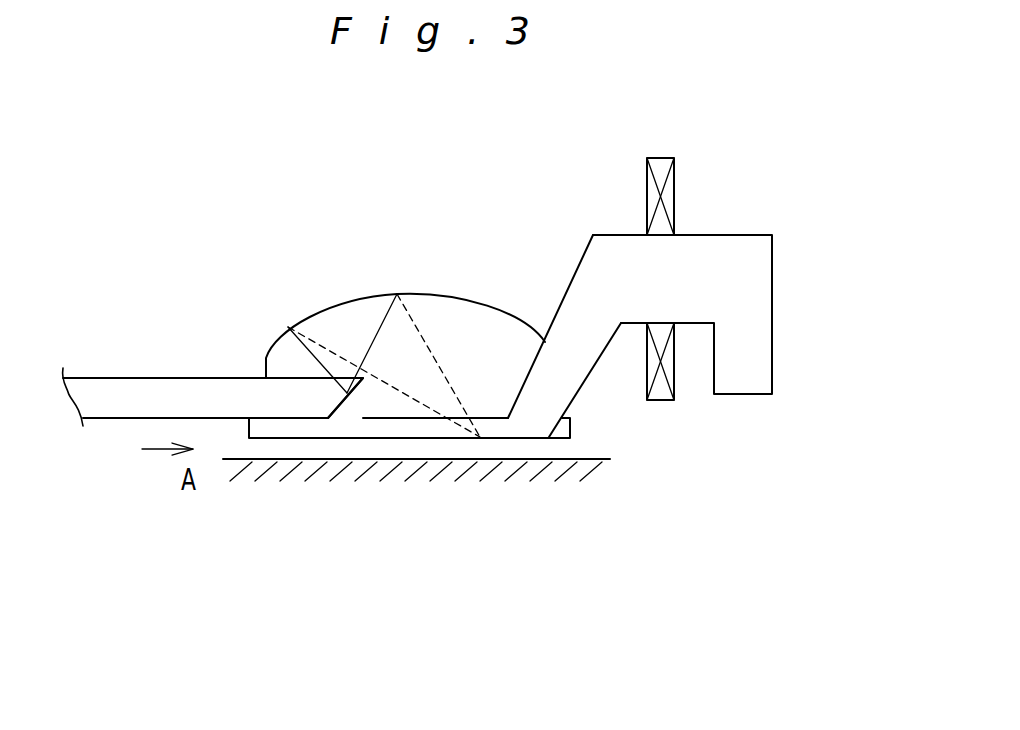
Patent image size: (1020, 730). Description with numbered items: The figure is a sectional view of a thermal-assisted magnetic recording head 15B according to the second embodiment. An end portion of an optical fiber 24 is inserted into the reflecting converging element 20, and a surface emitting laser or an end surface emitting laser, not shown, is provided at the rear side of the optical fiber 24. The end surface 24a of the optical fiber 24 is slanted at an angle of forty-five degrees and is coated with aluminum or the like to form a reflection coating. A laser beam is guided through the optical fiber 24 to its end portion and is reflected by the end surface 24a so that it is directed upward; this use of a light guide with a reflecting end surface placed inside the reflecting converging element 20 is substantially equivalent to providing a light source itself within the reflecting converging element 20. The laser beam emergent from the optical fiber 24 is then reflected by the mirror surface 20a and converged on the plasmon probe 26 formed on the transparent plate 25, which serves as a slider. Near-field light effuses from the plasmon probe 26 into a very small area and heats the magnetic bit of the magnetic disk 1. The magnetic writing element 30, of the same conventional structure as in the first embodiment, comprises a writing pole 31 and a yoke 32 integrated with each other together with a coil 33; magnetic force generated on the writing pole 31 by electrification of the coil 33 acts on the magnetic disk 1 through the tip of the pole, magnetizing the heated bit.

The magnetic disk 1 is at (585, 453).
The thermal-assisted magnetic recording head 15B is at (387, 207).
The reflecting converging element 20 is at (267, 347).
The mirror surface 20a is at (317, 312).
The optical fiber 24 is at (100, 377).
The end surface 24a is at (343, 400).
The transparent plate 25 is at (433, 430).
The plasmon probe 26 is at (487, 437).
The magnetic writing element 30 is at (687, 283).
The writing pole 31 is at (572, 277).
The yoke 32 is at (772, 345).
The coil 33 is at (674, 190).